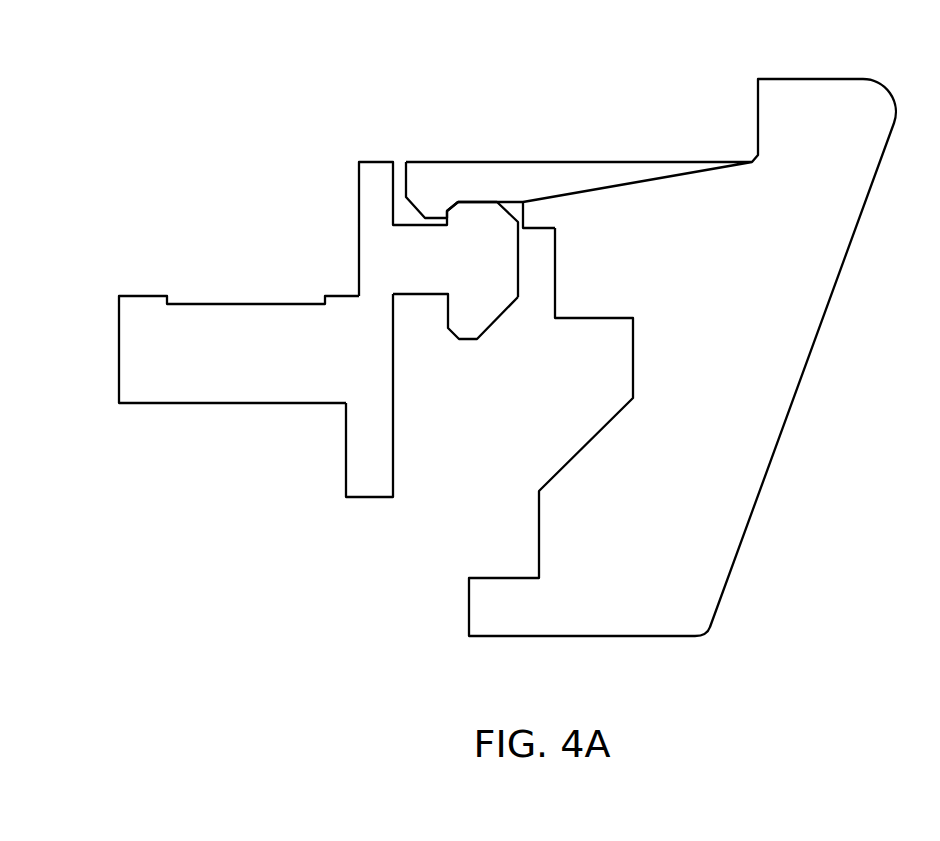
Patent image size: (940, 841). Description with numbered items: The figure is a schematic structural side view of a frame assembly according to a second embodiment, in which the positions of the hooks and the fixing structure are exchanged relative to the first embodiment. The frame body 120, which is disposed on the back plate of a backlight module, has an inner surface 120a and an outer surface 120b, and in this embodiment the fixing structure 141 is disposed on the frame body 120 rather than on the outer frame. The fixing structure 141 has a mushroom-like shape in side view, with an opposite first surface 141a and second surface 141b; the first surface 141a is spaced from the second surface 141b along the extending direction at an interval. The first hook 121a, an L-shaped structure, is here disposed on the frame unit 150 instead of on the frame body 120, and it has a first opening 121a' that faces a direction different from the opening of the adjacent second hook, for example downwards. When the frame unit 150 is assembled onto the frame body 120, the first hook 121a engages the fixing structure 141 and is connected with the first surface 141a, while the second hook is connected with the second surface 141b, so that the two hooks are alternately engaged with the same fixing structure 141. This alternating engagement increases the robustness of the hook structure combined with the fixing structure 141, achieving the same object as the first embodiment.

The frame body 120 is at (283, 350).
The inner surface 120a is at (358, 202).
The outer surface 120b is at (395, 440).
The first hook 121a is at (434, 127).
The first opening 121a' is at (552, 149).
The fixing structure 141 is at (534, 224).
The first surface 141a is at (476, 200).
The second surface 141b is at (469, 340).
The frame unit 150 is at (661, 336).